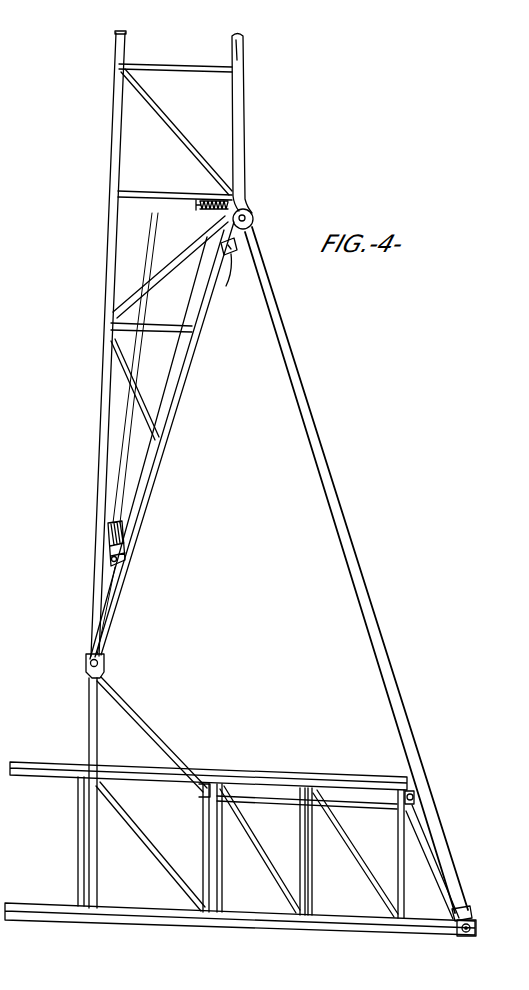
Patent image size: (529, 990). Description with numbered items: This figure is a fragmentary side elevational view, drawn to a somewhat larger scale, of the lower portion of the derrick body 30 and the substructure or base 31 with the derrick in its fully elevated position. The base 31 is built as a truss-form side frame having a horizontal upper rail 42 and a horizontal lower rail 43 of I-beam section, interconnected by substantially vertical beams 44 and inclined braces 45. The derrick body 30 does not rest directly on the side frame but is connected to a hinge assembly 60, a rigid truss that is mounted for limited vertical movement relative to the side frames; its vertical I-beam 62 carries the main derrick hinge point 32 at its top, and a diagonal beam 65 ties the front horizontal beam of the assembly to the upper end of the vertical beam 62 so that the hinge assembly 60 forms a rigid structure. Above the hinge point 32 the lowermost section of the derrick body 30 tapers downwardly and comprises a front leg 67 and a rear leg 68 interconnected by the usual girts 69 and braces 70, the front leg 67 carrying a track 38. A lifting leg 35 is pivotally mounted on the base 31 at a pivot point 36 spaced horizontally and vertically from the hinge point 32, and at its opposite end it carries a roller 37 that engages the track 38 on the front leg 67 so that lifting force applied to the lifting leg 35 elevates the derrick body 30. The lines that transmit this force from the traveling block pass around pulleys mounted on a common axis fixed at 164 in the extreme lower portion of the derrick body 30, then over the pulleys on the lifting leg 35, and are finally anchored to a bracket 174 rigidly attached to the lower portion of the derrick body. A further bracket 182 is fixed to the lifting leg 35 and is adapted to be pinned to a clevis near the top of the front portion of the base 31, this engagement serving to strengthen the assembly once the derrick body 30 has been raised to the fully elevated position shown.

The main derrick body 30 is at (104, 140).
The substructure or base 31 is at (135, 924).
The hinge point 32 is at (87, 660).
The lifting leg 35 is at (350, 545).
The pivot point 36 is at (462, 934).
The roller 37 is at (254, 215).
The track 38 is at (239, 112).
The upper rail 42 is at (252, 775).
The lower rail 43 is at (277, 922).
The vertical beam 44 is at (85, 828).
The inclined brace 45 is at (150, 846).
The hinge assembly 60 is at (82, 712).
The vertical I-beam 62 is at (89, 727).
The diagonal beam 65 is at (135, 718).
The front leg 67 is at (242, 54).
The rear leg 68 is at (104, 408).
The girt 69 is at (191, 67).
The brace 70 is at (173, 130).
The common axis 164 is at (116, 570).
The bracket 174 is at (238, 278).
The bracket 182 is at (414, 795).